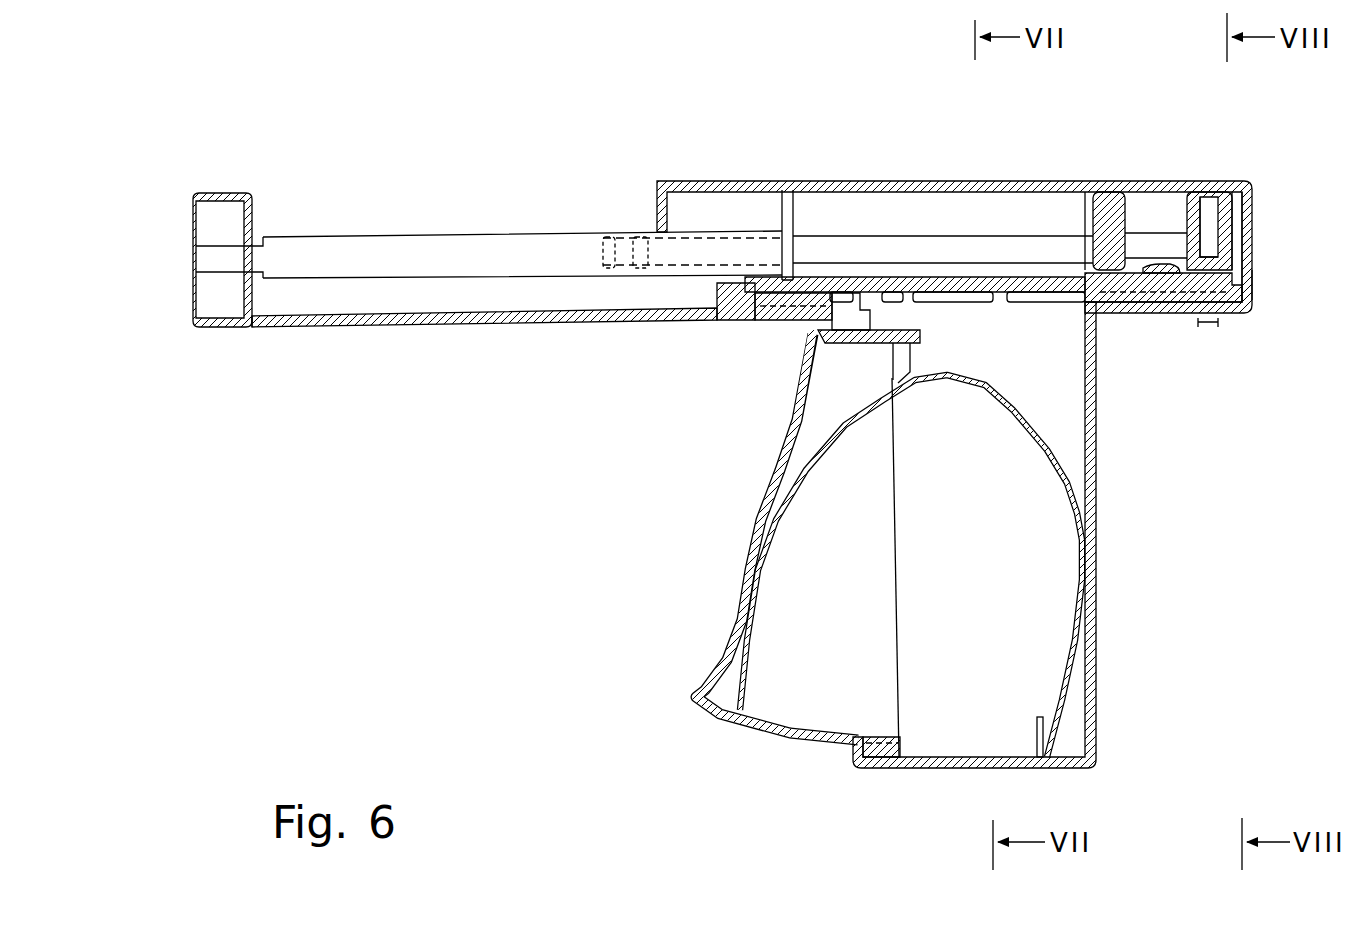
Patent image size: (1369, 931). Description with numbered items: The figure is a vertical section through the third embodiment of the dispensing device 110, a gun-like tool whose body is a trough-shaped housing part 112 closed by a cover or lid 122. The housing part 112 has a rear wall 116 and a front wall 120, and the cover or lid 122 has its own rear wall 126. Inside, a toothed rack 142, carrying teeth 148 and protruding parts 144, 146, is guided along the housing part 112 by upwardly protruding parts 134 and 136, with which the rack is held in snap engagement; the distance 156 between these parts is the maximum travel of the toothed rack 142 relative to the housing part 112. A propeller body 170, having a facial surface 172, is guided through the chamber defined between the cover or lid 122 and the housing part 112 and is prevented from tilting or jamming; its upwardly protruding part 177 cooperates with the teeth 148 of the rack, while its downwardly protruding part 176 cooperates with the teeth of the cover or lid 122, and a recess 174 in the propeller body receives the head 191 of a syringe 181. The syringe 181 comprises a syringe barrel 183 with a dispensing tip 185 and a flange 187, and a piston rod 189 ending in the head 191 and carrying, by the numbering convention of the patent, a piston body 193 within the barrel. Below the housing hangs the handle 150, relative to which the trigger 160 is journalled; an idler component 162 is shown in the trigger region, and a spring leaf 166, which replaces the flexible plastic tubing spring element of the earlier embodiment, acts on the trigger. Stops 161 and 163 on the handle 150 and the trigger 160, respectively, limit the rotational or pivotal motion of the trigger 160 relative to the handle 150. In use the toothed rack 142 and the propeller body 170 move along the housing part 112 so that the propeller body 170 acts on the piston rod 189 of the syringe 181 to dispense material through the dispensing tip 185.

The dispensing device 110 is at (535, 145).
The trough-shaped housing part 112 is at (456, 318).
The rear wall 116 is at (1255, 285).
The front wall 120 is at (262, 297).
The cover or lid 122 is at (818, 185).
The rear wall 126 is at (1255, 215).
The protruding part 134 is at (1208, 328).
The protruding part 136 is at (740, 320).
The toothed rack 142 is at (870, 278).
The protruding part 144 is at (840, 312).
The protruding part 146 is at (960, 290).
The teeth 148 is at (915, 290).
The handle 150 is at (1098, 455).
The distance 156 is at (1240, 305).
The trigger 160 is at (704, 712).
The stop 161 is at (1058, 748).
The idler component 162 is at (830, 350).
The stop 163 is at (882, 768).
The spring leaf 166 is at (1088, 650).
The propeller body 170 is at (1188, 210).
The facial surface 172 is at (1090, 215).
The recess 174 is at (1225, 190).
The protruding part 176 is at (1160, 292).
The protruding part 177 is at (1108, 195).
The syringe 181 is at (436, 255).
The syringe barrel 183 is at (533, 248).
The dispensing tip 185 is at (200, 262).
The flange 187 is at (790, 215).
The piston rod 189 is at (808, 245).
The head 191 is at (1212, 210).
The rod markings 193 is at (603, 252).